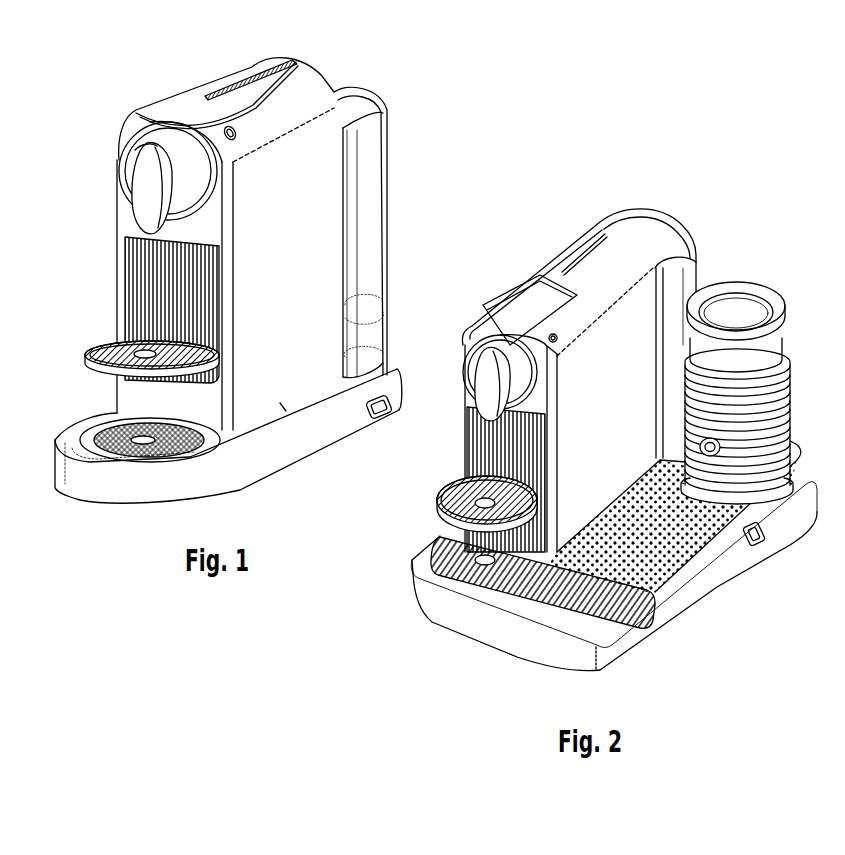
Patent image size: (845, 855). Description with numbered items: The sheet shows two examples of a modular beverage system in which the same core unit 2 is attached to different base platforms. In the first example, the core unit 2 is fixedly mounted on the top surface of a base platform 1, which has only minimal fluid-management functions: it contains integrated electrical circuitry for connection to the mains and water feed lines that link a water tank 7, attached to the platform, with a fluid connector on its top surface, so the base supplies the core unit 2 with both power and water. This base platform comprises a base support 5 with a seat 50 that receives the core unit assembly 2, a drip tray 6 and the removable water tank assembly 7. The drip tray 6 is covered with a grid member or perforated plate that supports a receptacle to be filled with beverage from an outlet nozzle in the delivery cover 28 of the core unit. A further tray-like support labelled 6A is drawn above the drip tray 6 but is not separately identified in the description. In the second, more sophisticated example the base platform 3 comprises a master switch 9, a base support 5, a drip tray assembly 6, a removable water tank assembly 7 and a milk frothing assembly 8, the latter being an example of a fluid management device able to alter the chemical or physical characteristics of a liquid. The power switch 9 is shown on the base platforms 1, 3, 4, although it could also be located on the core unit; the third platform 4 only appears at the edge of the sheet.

In FIG. 1, the base platform 1 is at (233, 281).
In FIG. 1, the core unit 2 is at (116, 125).
In FIG. 2, the core unit 2 is at (653, 319).
In FIG. 1, the delivery cover 28 is at (148, 208).
In FIG. 2, the delivery cover 28 is at (480, 392).
In FIG. 1, the cup support drip tray 6A is at (104, 352).
In FIG. 2, the cup support drip tray 6A is at (450, 486).
In FIG. 1, the drip tray 6 is at (97, 420).
In FIG. 2, the drip tray 6 is at (543, 582).
In FIG. 1, the base support 5 is at (234, 452).
In FIG. 2, the base support 5 is at (768, 504).
In FIG. 1, the seat 50 is at (285, 411).
In FIG. 1, the master switch 9 is at (383, 412).
In FIG. 2, the master switch 9 is at (760, 547).
In FIG. 1, the water tank assembly 7 is at (390, 197).
In FIG. 2, the water tank assembly 7 is at (702, 271).
In FIG. 2, the base platform 3 is at (712, 575).
In FIG. 2, the milk frothing assembly 8 is at (795, 362).
In FIG. 2, the base platform 4 is at (840, 729).